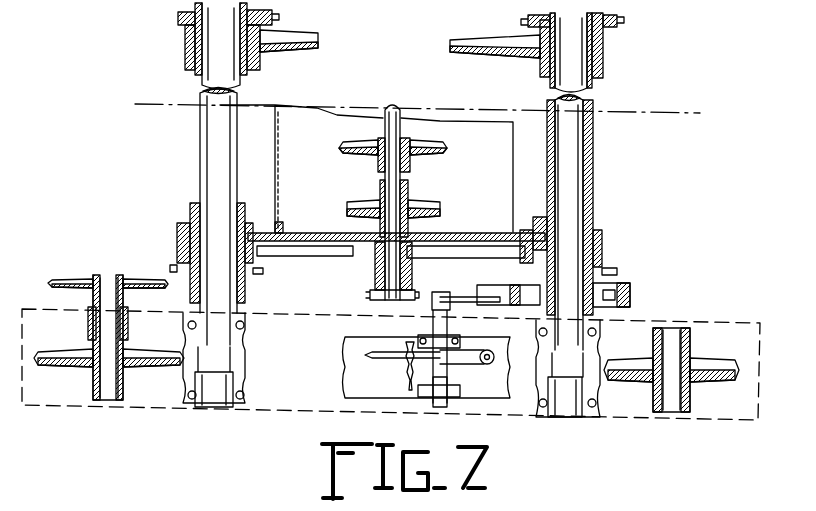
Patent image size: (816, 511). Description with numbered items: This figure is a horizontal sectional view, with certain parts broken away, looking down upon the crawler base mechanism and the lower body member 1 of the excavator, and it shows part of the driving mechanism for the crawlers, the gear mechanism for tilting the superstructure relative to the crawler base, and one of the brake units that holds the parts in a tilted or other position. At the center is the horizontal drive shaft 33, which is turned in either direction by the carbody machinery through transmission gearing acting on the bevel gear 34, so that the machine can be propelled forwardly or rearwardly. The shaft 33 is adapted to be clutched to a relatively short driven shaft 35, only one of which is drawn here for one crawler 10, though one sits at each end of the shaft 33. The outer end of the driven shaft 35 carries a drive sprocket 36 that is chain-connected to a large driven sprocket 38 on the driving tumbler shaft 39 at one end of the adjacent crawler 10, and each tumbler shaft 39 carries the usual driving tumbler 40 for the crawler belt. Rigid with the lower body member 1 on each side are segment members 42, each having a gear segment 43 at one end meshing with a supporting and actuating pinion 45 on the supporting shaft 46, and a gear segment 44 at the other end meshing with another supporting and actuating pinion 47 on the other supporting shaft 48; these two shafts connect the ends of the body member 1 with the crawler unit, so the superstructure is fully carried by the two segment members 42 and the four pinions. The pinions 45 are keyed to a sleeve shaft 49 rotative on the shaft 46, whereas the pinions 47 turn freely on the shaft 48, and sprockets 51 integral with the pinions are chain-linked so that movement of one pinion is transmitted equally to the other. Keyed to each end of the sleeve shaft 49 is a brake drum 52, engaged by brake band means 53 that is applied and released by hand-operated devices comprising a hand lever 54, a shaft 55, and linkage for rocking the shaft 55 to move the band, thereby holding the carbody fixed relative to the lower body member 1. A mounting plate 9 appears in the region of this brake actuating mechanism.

The lower body member 1 is at (279, 172).
The mounting plate 9 is at (345, 369).
The crawler 10 is at (716, 324).
The horizontal drive shaft 33 is at (400, 108).
The bevel gear 34 is at (448, 148).
The driven shaft 35 is at (376, 264).
The drive sprocket 36 is at (371, 293).
The driven sprocket 38 is at (77, 278).
The driving tumbler shaft 39 is at (112, 350).
The driving tumbler 40 is at (78, 362).
The segment member 42 is at (320, 40).
The gear segment 43 is at (555, 243).
The gear segment 44 is at (278, 228).
The supporting and actuating pinion 45 is at (605, 48).
The supporting shaft 46 is at (600, 86).
The supporting and actuating pinion 47 is at (185, 46).
The supporting shaft 48 is at (210, 82).
The sleeve shaft 49 is at (595, 151).
The sprocket 51 is at (273, 18).
The brake drum 52 is at (610, 301).
The brake band means 53 is at (620, 305).
The hand lever 54 is at (403, 392).
The shaft 55 is at (453, 331).